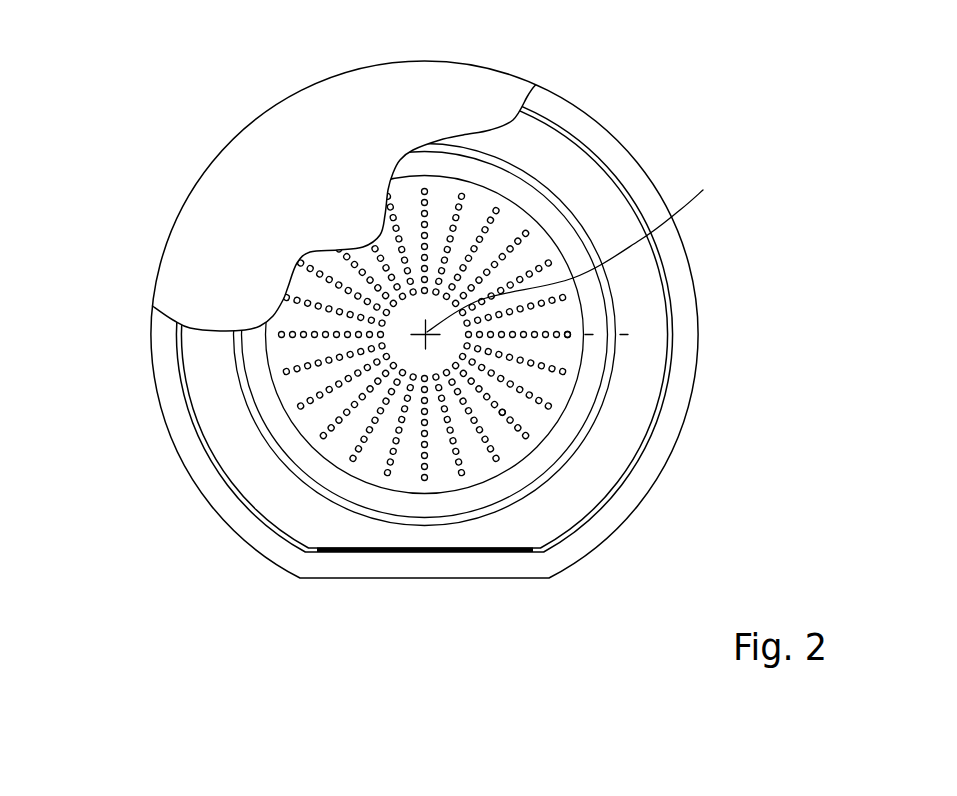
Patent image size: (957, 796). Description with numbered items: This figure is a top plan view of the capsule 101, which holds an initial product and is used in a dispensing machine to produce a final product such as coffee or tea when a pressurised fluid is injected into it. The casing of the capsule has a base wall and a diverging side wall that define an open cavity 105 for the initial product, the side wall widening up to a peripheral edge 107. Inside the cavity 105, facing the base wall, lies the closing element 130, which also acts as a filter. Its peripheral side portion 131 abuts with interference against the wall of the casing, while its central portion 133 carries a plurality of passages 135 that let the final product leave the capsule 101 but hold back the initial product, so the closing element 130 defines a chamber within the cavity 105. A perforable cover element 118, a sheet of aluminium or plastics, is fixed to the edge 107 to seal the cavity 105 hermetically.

The capsule 101 is at (435, 329).
The cavity 105 is at (220, 380).
The peripheral edge 107 is at (190, 460).
The cover element 118 is at (217, 195).
The closing element 130 is at (308, 312).
The peripheral side portion 131 is at (430, 495).
The central portion 133 is at (492, 422).
The passages 135 is at (570, 335).